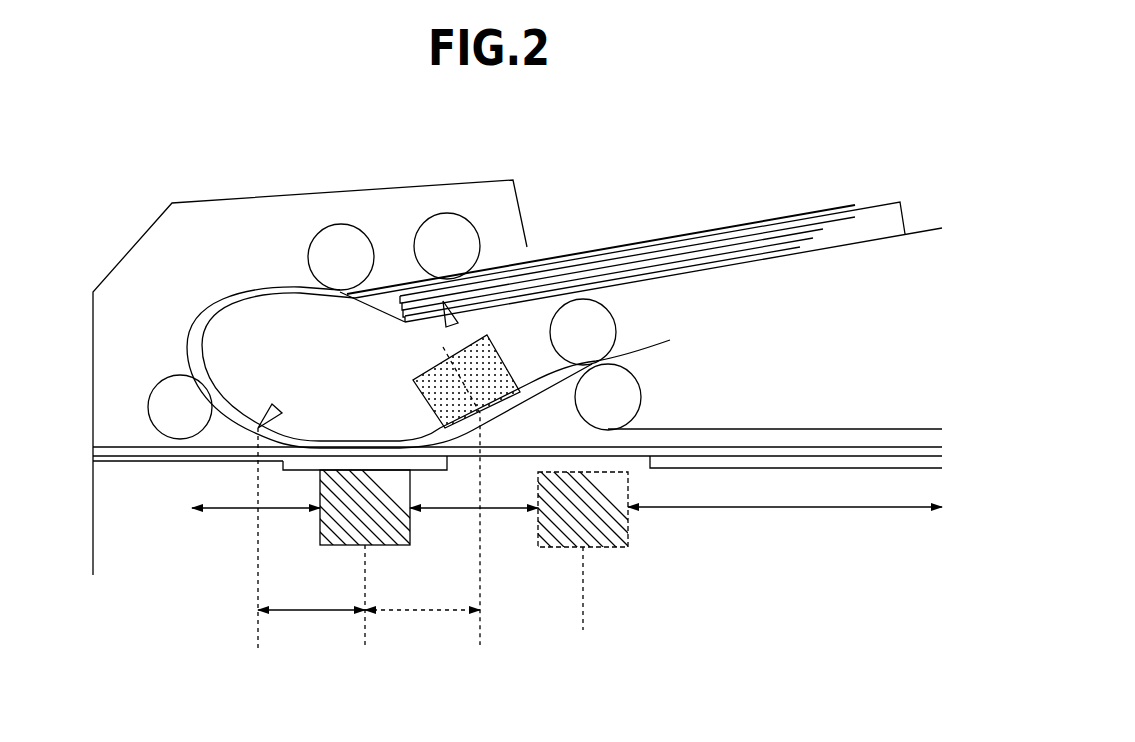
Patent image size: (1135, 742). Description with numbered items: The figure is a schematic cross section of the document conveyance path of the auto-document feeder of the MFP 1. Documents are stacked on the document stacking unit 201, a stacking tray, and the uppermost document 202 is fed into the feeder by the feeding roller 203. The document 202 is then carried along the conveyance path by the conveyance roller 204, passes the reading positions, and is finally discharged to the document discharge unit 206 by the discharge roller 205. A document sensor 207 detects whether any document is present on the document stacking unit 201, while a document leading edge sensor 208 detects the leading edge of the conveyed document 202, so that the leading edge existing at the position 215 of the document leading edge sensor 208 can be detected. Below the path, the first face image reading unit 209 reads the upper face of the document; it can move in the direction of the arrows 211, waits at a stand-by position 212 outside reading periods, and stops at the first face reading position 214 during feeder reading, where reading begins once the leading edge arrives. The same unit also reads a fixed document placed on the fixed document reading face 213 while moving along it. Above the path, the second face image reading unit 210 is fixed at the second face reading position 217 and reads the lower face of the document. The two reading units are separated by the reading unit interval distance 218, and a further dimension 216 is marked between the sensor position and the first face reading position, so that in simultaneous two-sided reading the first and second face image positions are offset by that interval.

The MFP 1 is at (93, 518).
The document stacking unit 201 is at (923, 230).
The document 202 is at (677, 236).
The feeding roller 203 is at (447, 213).
The conveyance roller 204 is at (148, 407).
The discharge roller 205 is at (616, 322).
The document discharge unit 206 is at (830, 428).
The document sensor 207 is at (433, 324).
The document leading edge sensor 208 is at (283, 410).
The first face image reading unit 209 is at (332, 546).
The second face image reading unit 210 is at (432, 410).
The arrows 211 is at (225, 508).
The stand-by position 212 is at (585, 600).
The fixed document reading face 213 is at (745, 468).
The first face reading position 214 is at (365, 645).
The position of the document leading edge sensor 215 is at (258, 650).
The distance between sensor and reading position 216 is at (313, 611).
The second face reading position 217 is at (480, 645).
The reading unit interval distance 218 is at (421, 611).